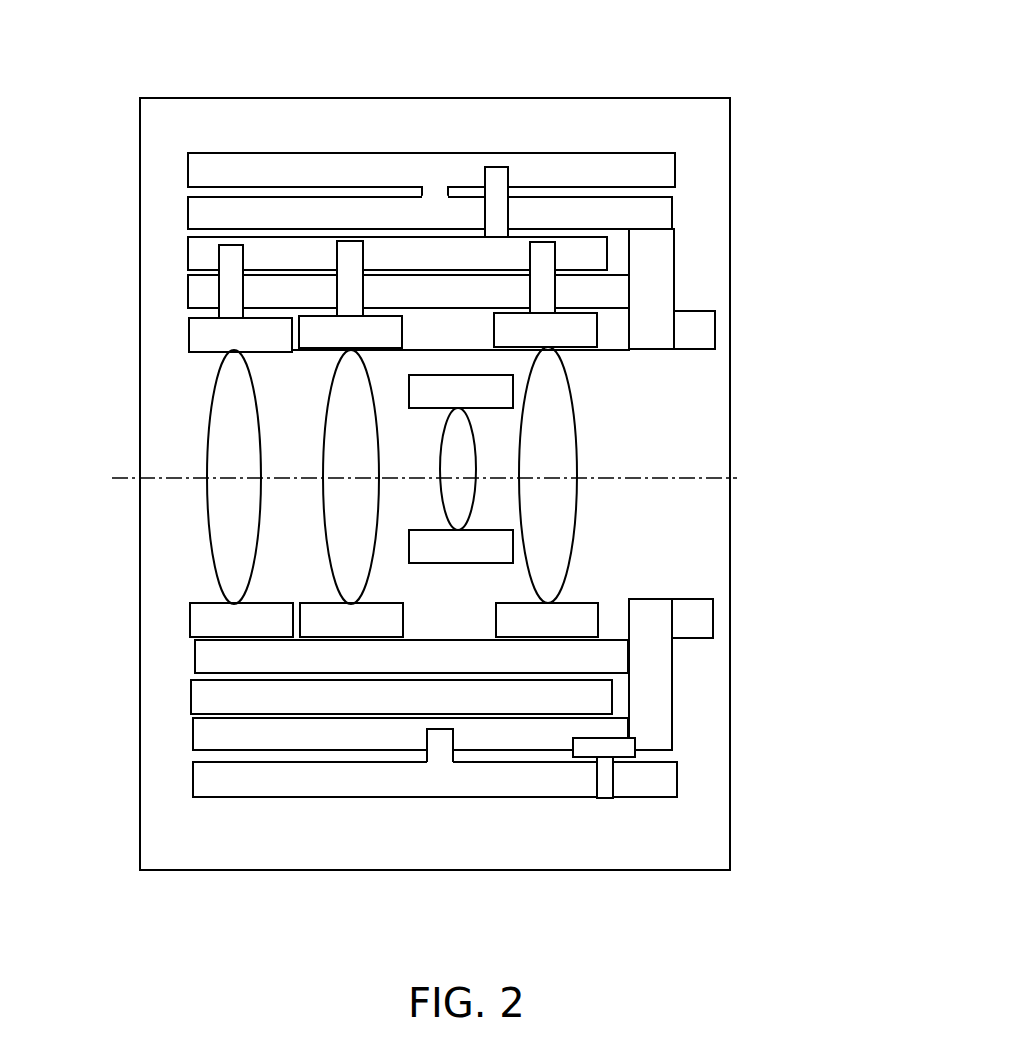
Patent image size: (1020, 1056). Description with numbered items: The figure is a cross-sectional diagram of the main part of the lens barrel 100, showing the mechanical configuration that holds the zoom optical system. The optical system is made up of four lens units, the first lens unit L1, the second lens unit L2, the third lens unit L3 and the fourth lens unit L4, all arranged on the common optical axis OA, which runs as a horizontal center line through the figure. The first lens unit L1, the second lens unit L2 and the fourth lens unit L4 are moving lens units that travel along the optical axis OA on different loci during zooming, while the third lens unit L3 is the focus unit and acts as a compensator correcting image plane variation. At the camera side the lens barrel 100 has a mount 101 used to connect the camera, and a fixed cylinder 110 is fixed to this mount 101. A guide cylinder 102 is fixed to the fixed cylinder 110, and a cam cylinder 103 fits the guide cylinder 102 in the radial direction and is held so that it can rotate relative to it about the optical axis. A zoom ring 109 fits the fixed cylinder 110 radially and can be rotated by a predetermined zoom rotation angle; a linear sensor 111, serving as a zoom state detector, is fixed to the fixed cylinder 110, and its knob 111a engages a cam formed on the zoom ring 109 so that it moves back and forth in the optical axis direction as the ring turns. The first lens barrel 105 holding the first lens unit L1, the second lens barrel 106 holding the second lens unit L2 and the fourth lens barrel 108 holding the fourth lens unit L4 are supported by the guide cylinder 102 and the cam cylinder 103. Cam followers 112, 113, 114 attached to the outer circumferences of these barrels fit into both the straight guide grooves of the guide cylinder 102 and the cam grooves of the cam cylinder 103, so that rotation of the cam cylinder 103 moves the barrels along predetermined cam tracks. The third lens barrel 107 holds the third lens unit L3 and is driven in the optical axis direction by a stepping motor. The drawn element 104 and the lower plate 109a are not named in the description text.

The lens barrel 100 is at (508, 98).
The mount 101 is at (695, 330).
The guide cylinder 102 is at (607, 292).
The cam cylinder 103 is at (597, 257).
The drive post 104 is at (512, 173).
The first lens barrel 105 is at (202, 337).
The second lens barrel 106 is at (315, 328).
The third lens barrel 107 is at (420, 555).
The fourth lens barrel 108 is at (567, 330).
The zoom ring 109 is at (650, 175).
The bottom cover plate 109a is at (613, 777).
The fixed cylinder 110 is at (657, 217).
The linear sensor 111 is at (571, 843).
The knob 111a is at (585, 753).
The cam follower 112 is at (230, 278).
The cam follower 113 is at (348, 258).
The cam follower 114 is at (542, 293).
The first lens unit L1 is at (223, 410).
The second lens unit L2 is at (358, 460).
The third lens unit L3 is at (450, 463).
The fourth lens unit L4 is at (550, 502).
The optical axis OA is at (128, 478).